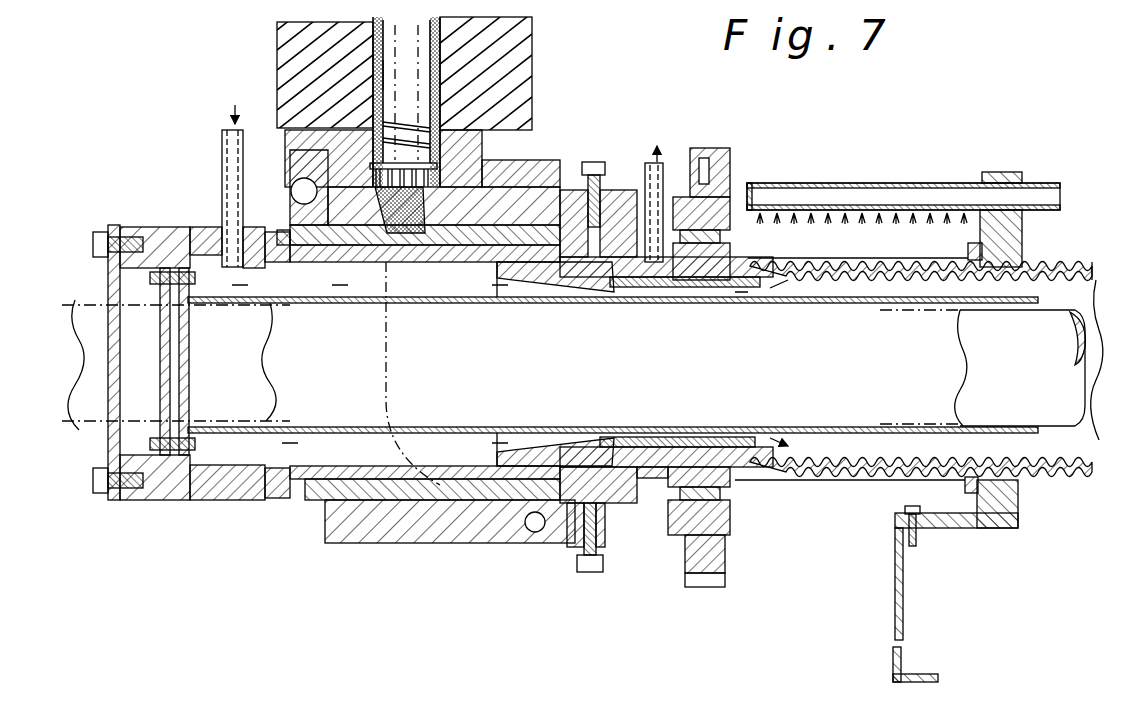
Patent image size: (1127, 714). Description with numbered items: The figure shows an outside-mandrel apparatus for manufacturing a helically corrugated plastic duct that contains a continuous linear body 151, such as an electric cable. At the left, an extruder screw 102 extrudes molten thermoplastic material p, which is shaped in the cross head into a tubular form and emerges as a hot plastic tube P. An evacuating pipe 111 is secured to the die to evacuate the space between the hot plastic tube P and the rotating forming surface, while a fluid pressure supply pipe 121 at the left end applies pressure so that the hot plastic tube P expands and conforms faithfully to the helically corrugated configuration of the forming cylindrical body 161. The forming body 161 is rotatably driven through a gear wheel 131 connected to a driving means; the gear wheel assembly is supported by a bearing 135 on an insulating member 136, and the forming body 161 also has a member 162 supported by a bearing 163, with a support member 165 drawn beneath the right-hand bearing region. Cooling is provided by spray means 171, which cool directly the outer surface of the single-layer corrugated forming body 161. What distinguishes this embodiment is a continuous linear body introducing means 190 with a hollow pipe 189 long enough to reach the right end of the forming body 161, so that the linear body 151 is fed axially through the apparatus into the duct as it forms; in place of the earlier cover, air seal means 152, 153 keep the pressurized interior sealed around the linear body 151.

The screw 102 is at (405, 125).
The molten thermoplastic material p is at (437, 72).
The evacuating pipe 111 is at (659, 163).
The fluid pressure supply pipe 121 is at (226, 131).
The gear wheel 131 is at (720, 150).
The bearing 135 is at (718, 290).
The insulating member 136 is at (690, 284).
The continuous linear body 151 is at (70, 394).
The air seal means 152 is at (112, 498).
The air seal means 153 is at (183, 458).
The forming cylindrical body 161 is at (814, 265).
The member 162 is at (975, 255).
The bearing 163 is at (1020, 251).
The support bracket 165 is at (968, 529).
The spray means 171 is at (890, 206).
The hollow pipe 189 is at (527, 304).
The continuous linear body introducing means 190 is at (186, 203).
The hot plastic tube P is at (1080, 270).